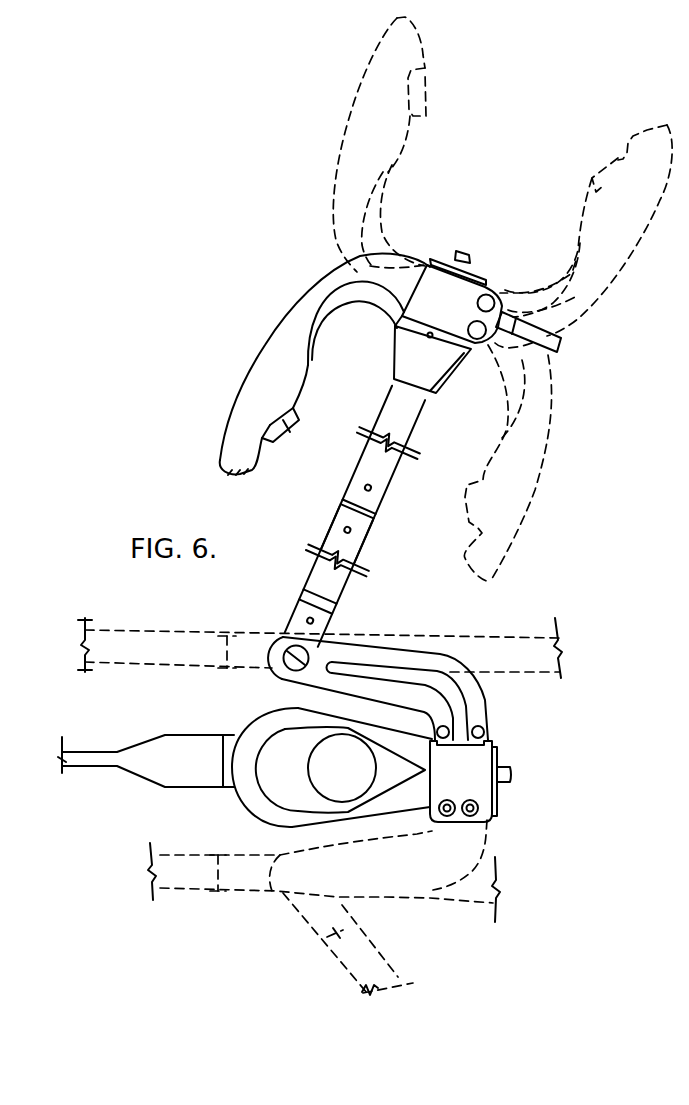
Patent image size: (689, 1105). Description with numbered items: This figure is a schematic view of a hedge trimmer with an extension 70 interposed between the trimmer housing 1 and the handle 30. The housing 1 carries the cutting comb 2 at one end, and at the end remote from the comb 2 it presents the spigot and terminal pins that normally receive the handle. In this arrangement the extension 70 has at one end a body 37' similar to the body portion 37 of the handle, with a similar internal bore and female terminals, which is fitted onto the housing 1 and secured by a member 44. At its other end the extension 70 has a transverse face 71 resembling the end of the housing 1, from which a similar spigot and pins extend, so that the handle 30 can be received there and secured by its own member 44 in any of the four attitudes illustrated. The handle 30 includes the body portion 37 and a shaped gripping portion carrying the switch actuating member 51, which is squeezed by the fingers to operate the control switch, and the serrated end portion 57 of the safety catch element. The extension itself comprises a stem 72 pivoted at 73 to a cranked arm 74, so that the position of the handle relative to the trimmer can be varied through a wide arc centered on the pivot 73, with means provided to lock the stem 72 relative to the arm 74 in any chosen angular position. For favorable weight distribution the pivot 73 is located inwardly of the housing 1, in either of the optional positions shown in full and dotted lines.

The housing 1 is at (255, 798).
The comb 2 is at (80, 755).
The handle 30 is at (263, 365).
The body portion 37 is at (458, 284).
The body 37' is at (501, 781).
The domed end 44 is at (440, 255).
The switch actuating member 51 is at (287, 430).
The end portion 57 is at (245, 472).
The extension 70 is at (282, 592).
The transverse face 71 is at (395, 327).
The stem 72 is at (367, 525).
The pivot 73 is at (292, 657).
The cranked arm 74 is at (455, 673).